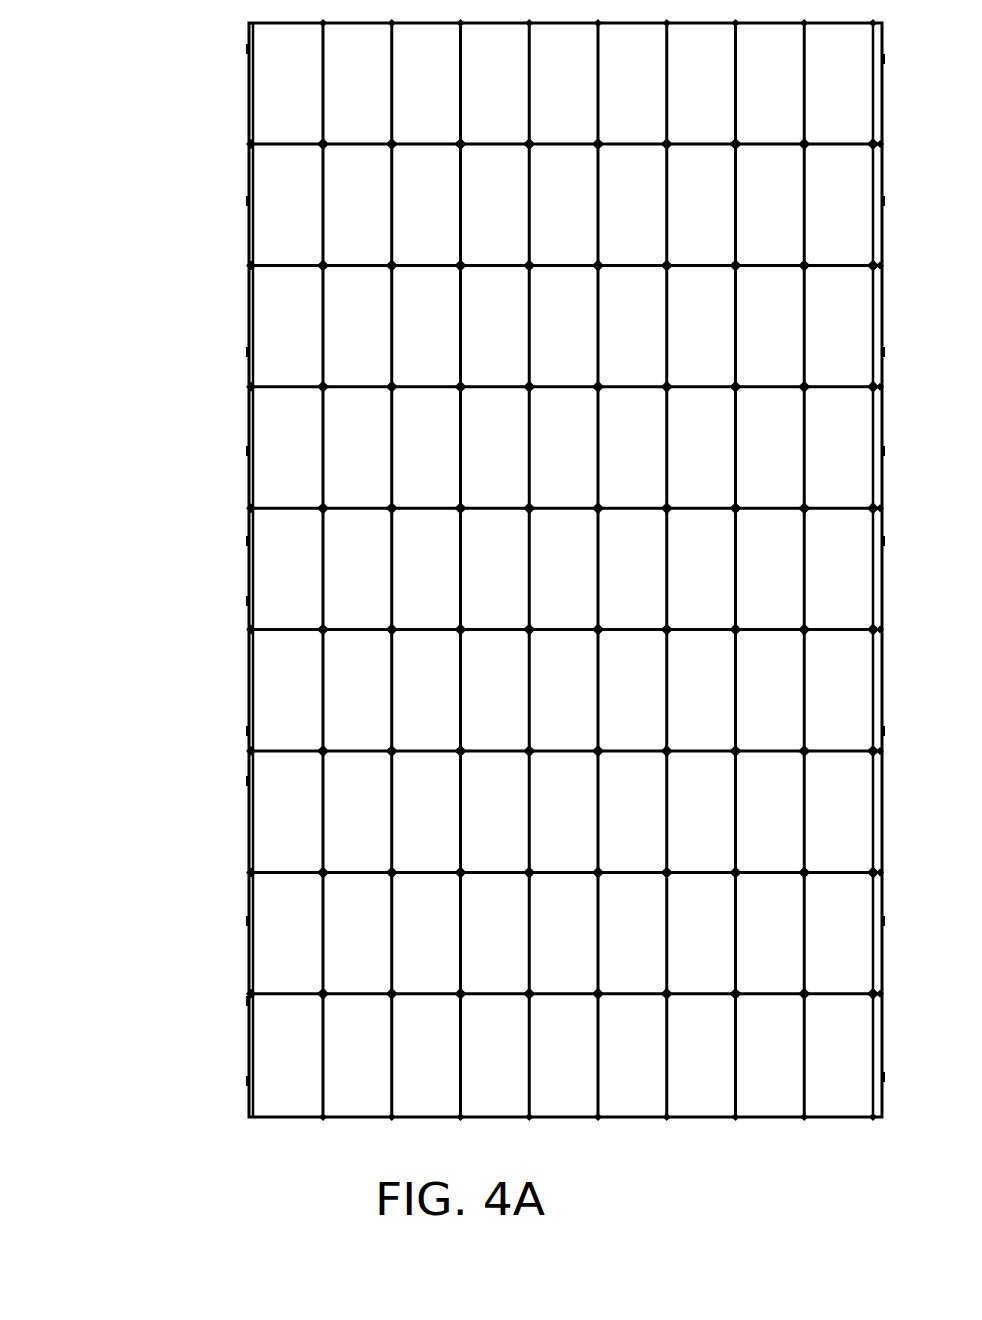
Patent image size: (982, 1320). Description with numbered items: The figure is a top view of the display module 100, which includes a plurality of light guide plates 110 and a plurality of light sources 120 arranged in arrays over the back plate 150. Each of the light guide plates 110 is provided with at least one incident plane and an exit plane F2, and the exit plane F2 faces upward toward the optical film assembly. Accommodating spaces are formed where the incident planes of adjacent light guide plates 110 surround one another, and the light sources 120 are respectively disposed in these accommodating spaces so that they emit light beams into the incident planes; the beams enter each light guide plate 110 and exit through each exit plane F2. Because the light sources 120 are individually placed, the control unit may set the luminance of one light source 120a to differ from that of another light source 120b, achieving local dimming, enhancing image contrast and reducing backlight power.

The display module 100 is at (144, 1129).
The back plate 150 is at (249, 614).
The light sources 120 is at (462, 570).
The light source 120a is at (392, 387).
The light source 120b is at (323, 387).
The light guide plates 110 is at (196, 508).
The exit plane F2 is at (287, 578).